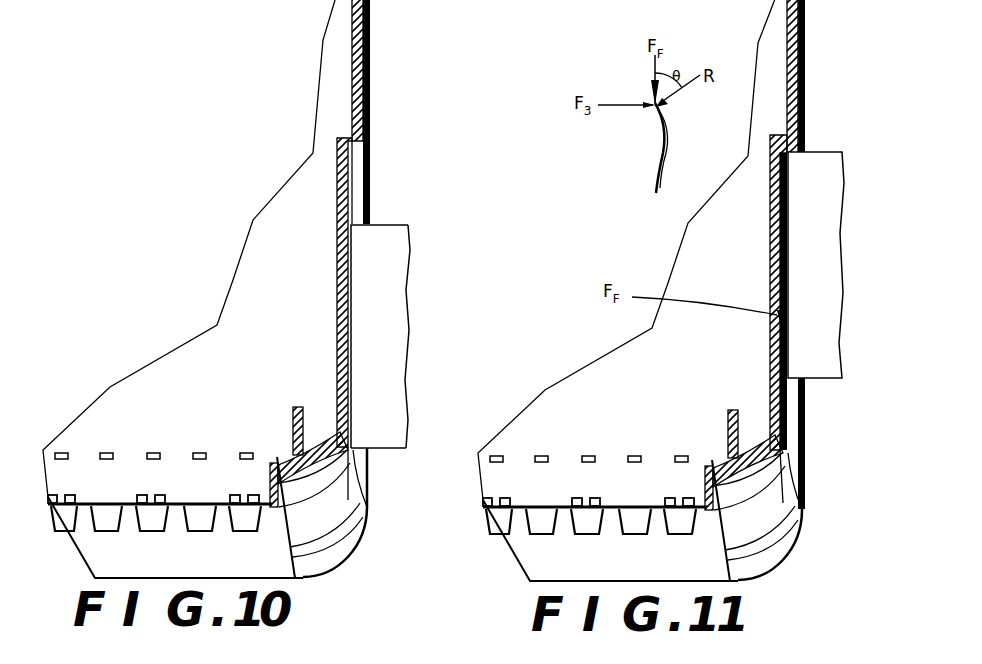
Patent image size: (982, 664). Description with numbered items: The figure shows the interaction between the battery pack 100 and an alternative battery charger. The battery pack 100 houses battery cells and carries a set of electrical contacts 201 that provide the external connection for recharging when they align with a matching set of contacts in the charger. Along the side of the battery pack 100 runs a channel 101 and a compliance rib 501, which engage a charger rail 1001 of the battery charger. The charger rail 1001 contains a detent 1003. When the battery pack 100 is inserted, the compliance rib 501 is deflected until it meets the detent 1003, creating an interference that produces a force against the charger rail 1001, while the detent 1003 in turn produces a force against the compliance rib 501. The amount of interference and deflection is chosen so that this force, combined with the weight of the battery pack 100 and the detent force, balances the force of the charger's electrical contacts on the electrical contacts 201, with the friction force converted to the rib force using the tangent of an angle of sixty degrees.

In FIG. 10, the battery pack 100 is at (333, 58).
In FIG. 11, the battery pack 100 is at (680, 254).
In FIG. 10, the channel 101 is at (355, 207).
In FIG. 10, the compliance rib 501 is at (348, 162).
In FIG. 11, the compliance rib 501 is at (702, 319).
In FIG. 10, the charger rail 1001 is at (387, 233).
In FIG. 11, the charger rail 1001 is at (839, 249).
In FIG. 10, the detent 1003 is at (351, 263).
In FIG. 10, the electrical contacts 201 is at (108, 532).
In FIG. 11, the electrical contacts 201 is at (558, 545).